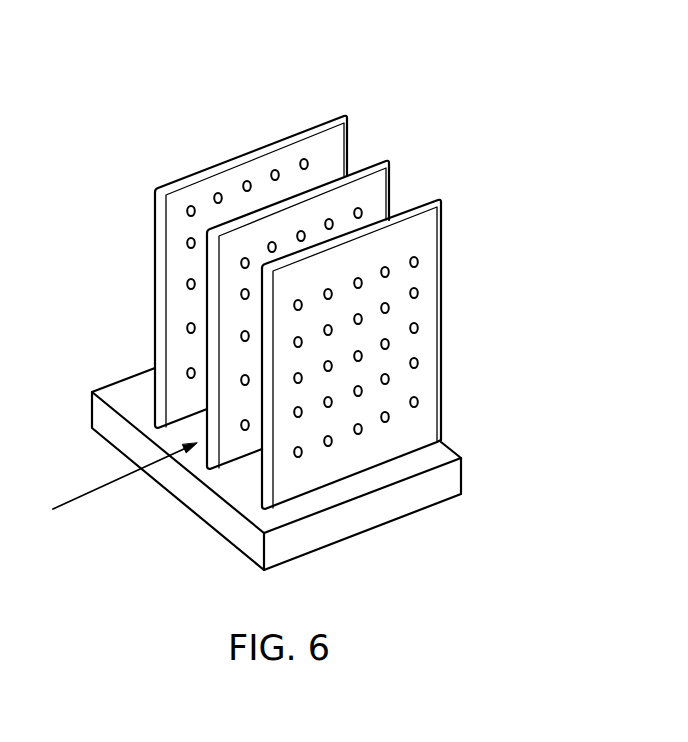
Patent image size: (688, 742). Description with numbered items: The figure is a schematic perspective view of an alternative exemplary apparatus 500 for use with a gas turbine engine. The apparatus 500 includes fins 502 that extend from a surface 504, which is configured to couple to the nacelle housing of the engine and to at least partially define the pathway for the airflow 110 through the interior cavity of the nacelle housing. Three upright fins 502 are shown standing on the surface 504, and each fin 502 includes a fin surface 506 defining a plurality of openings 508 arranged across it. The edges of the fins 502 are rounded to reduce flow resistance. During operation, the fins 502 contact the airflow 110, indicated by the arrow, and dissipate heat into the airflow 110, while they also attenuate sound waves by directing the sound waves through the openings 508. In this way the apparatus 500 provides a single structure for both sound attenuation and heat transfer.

The apparatus 500 is at (297, 314).
The fins 502 is at (328, 152).
The surface 504 is at (132, 393).
The fin surface 506 is at (358, 257).
The openings 508 is at (418, 323).
The airflow 110 is at (93, 493).